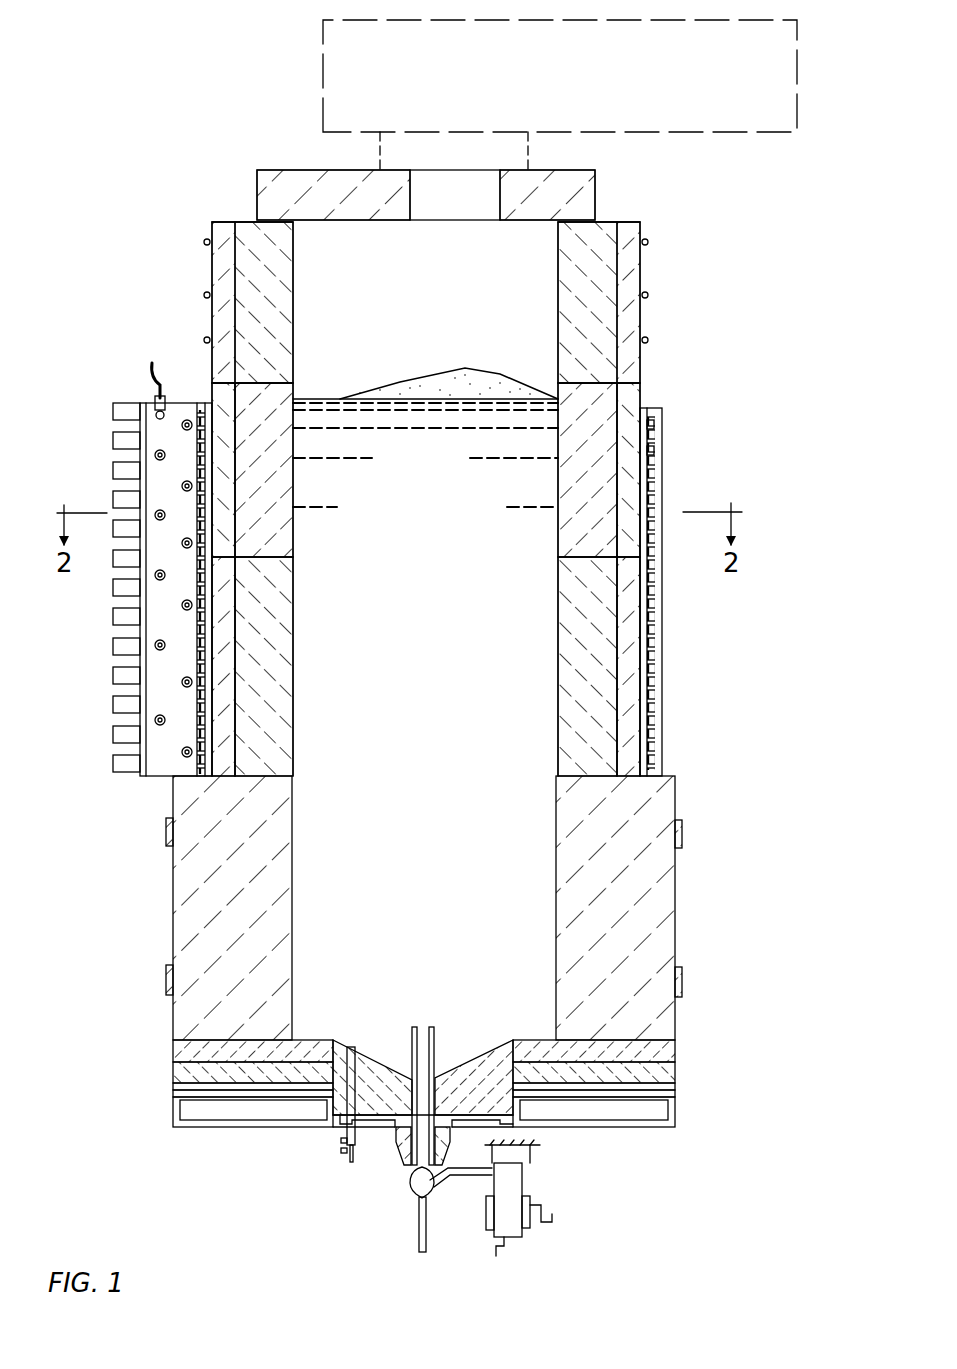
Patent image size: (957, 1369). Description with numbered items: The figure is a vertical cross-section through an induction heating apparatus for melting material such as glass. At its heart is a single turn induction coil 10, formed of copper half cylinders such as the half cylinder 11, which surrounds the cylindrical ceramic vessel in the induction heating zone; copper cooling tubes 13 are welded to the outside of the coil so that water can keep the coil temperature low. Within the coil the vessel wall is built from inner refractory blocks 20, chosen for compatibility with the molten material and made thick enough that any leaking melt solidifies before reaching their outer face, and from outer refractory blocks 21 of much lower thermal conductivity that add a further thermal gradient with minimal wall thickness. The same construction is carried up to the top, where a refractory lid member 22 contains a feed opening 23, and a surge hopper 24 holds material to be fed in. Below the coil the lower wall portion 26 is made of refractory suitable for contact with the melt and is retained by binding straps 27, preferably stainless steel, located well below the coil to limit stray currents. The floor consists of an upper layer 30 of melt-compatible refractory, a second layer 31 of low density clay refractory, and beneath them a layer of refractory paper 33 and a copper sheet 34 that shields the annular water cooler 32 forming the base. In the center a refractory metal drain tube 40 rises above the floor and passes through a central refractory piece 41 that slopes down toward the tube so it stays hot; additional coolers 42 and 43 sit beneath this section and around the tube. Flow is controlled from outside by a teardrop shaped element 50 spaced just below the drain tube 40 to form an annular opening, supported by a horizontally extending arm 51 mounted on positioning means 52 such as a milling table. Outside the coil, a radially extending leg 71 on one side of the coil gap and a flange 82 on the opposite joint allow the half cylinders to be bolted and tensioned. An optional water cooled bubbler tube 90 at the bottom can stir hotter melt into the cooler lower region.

The single turn induction coil 10 is at (660, 400).
The half cylinder 11 is at (640, 408).
The copper cooling tubes 13 is at (655, 425).
The refractory blocks 20 is at (293, 517).
The outer refractory blocks 21 is at (212, 272).
The refractory lid member 22 is at (330, 170).
The feed opening 23 is at (450, 210).
The surge hopper 24 is at (323, 50).
The lower wall portion 26 is at (675, 922).
The binding straps 27 is at (682, 826).
The upper layer of bottom structure 30 is at (675, 1053).
The second layer 31 is at (675, 1083).
The annular water cooler 32 is at (650, 1128).
The refractory paper layer 33 is at (180, 1088).
The copper sheet 34 is at (180, 1101).
The drain tube 40 is at (412, 1045).
The central refractory piece 41 is at (470, 1066).
The cooler 42 is at (345, 1137).
The cooler 43 is at (396, 1135).
The teardrop shaped flow control element 50 is at (418, 1188).
The horizontally extending arm 51 is at (470, 1180).
The positioning means 52 is at (530, 1225).
The radially extending leg 71 is at (150, 692).
The radially extending flange 82 is at (662, 655).
The water cooled bubbler tube 90 is at (345, 1168).